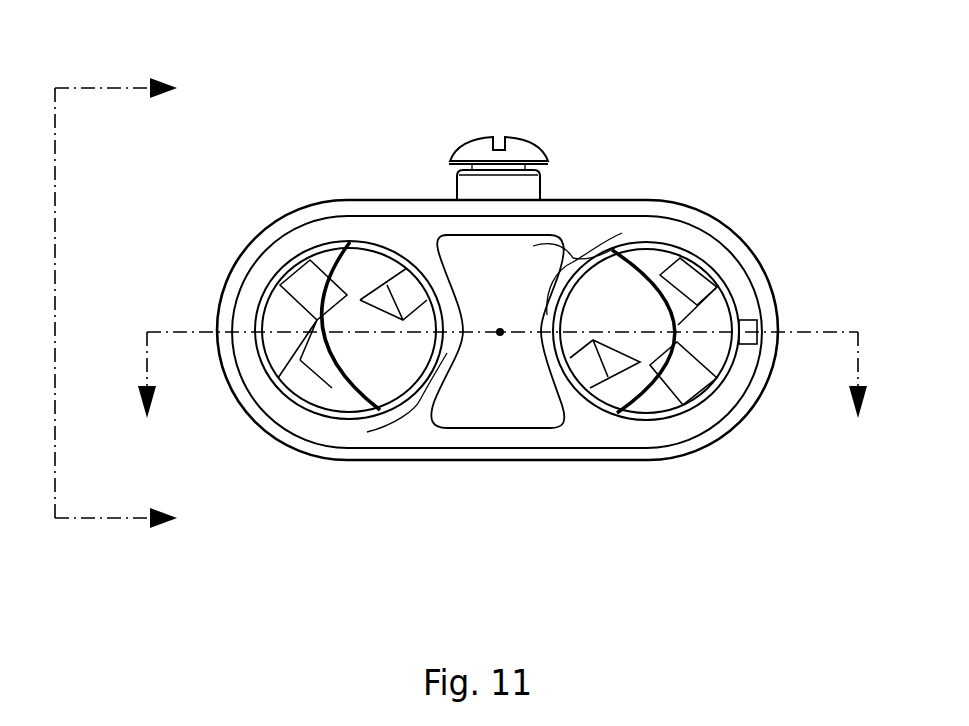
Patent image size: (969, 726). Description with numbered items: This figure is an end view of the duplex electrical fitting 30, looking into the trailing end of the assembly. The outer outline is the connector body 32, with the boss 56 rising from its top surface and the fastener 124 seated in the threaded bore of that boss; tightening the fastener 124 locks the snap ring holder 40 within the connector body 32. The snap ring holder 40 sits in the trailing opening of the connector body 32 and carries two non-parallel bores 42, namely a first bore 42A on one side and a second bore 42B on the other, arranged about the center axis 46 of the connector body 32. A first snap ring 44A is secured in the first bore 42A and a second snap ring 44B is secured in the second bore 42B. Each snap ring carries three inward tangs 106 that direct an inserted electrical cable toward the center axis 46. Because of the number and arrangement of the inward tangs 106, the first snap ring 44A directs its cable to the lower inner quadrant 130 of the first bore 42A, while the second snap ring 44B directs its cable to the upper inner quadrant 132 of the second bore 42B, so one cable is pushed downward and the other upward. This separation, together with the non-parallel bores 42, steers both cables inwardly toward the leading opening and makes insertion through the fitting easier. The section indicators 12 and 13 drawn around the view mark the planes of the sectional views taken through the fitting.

The section line 12- 12 is at (116, 308).
The section line 13- 13 is at (503, 375).
The duplex electrical fitting 30 is at (740, 163).
The connector body 32 is at (350, 199).
The snap ring holder 40 is at (586, 432).
The non-parallel bores 42 is at (506, 330).
The first bore 42A is at (417, 371).
The second bore 42B is at (581, 326).
The first snap ring 44A is at (333, 402).
The second snap ring 44B is at (660, 400).
The center axis 46 is at (503, 338).
The boss 56 is at (545, 195).
The inward tangs 106 is at (305, 386).
The fastener 124 is at (528, 138).
The lower inner quadrant 130 is at (428, 410).
The upper inner quadrant 132 is at (556, 274).